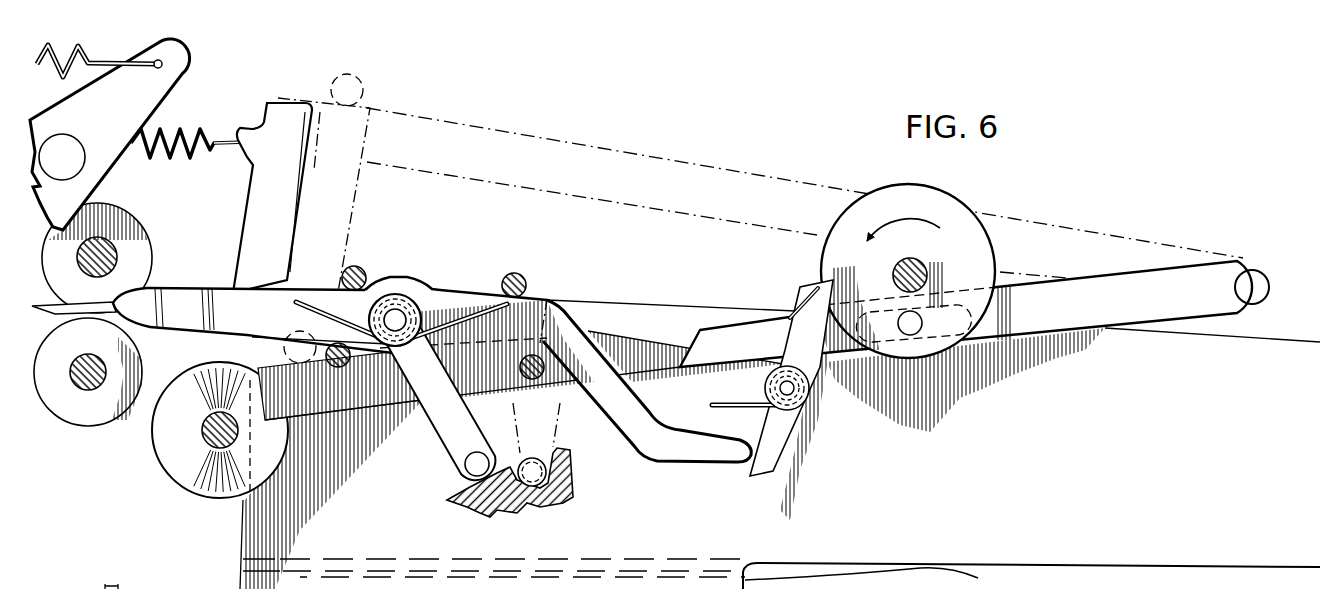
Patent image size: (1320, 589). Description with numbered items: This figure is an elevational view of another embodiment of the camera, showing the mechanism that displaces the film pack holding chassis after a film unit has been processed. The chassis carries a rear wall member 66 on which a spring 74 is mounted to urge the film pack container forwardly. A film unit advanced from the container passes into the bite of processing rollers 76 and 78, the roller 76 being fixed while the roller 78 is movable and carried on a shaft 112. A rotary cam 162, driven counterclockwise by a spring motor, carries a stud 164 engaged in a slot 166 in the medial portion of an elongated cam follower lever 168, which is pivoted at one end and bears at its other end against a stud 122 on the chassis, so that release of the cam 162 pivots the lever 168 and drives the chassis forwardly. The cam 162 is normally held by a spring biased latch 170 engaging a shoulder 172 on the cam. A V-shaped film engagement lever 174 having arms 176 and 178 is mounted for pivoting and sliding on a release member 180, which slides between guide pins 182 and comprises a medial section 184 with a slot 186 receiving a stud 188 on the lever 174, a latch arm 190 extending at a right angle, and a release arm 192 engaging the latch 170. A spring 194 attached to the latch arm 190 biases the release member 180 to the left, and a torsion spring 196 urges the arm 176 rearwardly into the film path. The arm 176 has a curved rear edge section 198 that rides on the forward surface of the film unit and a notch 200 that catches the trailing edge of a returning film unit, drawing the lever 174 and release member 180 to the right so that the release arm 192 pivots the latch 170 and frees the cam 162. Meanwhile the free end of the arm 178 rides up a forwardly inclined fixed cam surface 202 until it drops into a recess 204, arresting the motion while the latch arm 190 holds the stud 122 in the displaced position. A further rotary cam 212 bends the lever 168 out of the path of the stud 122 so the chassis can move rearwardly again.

The rear wall member 66 is at (1031, 576).
The spring 74 is at (879, 578).
The processing roller 76 is at (143, 235).
The processing roller 78 is at (125, 413).
The shaft 112 is at (83, 390).
The stud 122 is at (354, 87).
The rotary cam 162 is at (958, 210).
The stud 164 is at (904, 314).
The slot 166 is at (954, 303).
The cam follower lever 168 is at (546, 160).
The latch 170 is at (810, 352).
The shoulder 172 is at (822, 282).
The film engagement lever 174 is at (282, 302).
The arm 176 is at (224, 294).
The arm 178 is at (483, 433).
The release member 180 is at (479, 288).
The guide pins 182 is at (358, 268).
The medial section 184 is at (455, 300).
The slot 186 is at (394, 294).
The stud 188 is at (402, 327).
The latch arm 190 is at (243, 213).
The release arm 192 is at (690, 453).
The spring 194 is at (168, 133).
The torsion spring 196 is at (522, 312).
The curved rear edge section 198 is at (138, 331).
The notch 200 is at (112, 305).
The cam surface 202 is at (463, 480).
The recess 204 is at (552, 488).
The rotary cam 212 is at (152, 447).